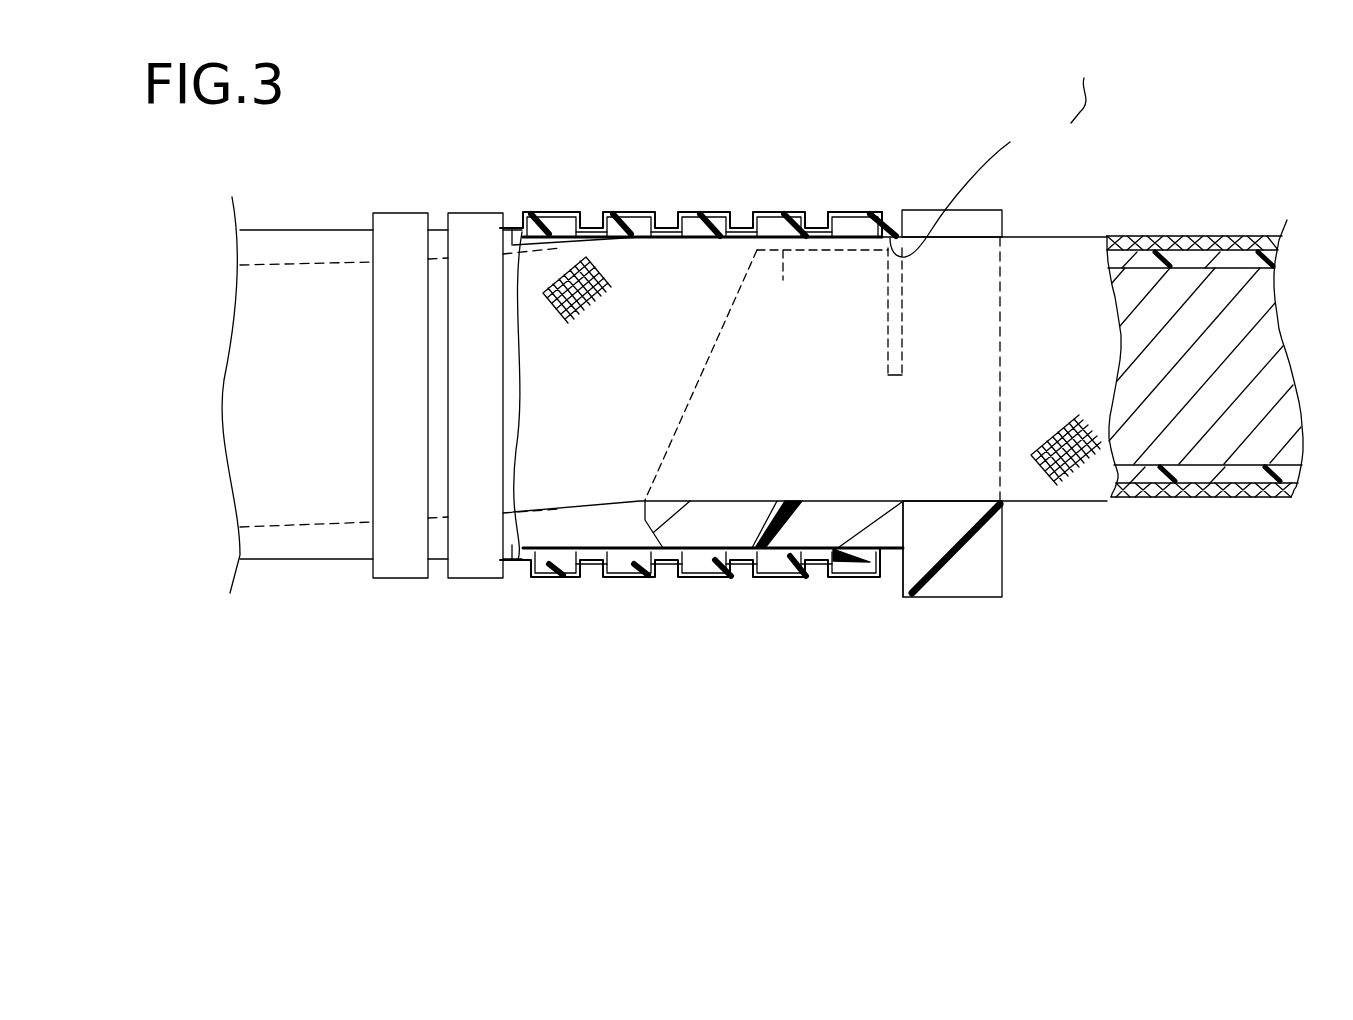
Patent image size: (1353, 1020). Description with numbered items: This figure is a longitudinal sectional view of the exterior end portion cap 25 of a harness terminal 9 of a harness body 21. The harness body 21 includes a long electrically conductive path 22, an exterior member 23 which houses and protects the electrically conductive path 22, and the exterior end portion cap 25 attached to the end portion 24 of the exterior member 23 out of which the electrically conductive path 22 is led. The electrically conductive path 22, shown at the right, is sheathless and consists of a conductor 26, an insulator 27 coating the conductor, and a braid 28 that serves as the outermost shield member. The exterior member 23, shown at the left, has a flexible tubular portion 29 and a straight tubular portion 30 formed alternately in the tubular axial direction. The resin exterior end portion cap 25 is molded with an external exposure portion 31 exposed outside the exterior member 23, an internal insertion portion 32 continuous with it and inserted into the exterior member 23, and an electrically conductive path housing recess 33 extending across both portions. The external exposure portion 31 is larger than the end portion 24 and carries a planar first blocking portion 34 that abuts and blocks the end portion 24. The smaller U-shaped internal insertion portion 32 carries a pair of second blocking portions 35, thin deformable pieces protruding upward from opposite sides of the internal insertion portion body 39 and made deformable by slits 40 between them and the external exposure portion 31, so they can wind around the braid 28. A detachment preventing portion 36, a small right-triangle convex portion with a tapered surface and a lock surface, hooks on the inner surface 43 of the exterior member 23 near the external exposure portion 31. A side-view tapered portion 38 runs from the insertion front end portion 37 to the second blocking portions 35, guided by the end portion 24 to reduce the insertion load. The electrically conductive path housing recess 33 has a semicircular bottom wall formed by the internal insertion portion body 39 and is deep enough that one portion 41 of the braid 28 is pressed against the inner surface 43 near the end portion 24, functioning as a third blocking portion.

The connector 9 is at (1081, 120).
The harness body 21 is at (1078, 100).
The electrically conductive path 22 is at (1205, 309).
The exterior member 23 is at (285, 228).
The end portion 24 is at (900, 582).
The exterior end portion cap 25 is at (945, 210).
The conductor 26 is at (1240, 160).
The insulator 27 is at (1180, 262).
The braid 28 is at (1220, 246).
The flexible tubular portion 29 is at (400, 561).
The straight tubular portion 30 is at (285, 561).
The external exposure portion 31 is at (973, 598).
The internal insertion portion 32 is at (705, 550).
The electrically conductive path housing recess 33 is at (813, 503).
The first blocking portion 34 is at (855, 546).
The second blocking portion 35 is at (783, 275).
The detachment preventing portion 36 is at (848, 565).
The insertion front end portion 37 is at (645, 520).
The side-view tapered portion 38 is at (683, 410).
The internal insertion portion body 39 is at (738, 528).
The slit 40 is at (895, 340).
The one portion 41 is at (855, 212).
The inner surface 43 is at (965, 190).